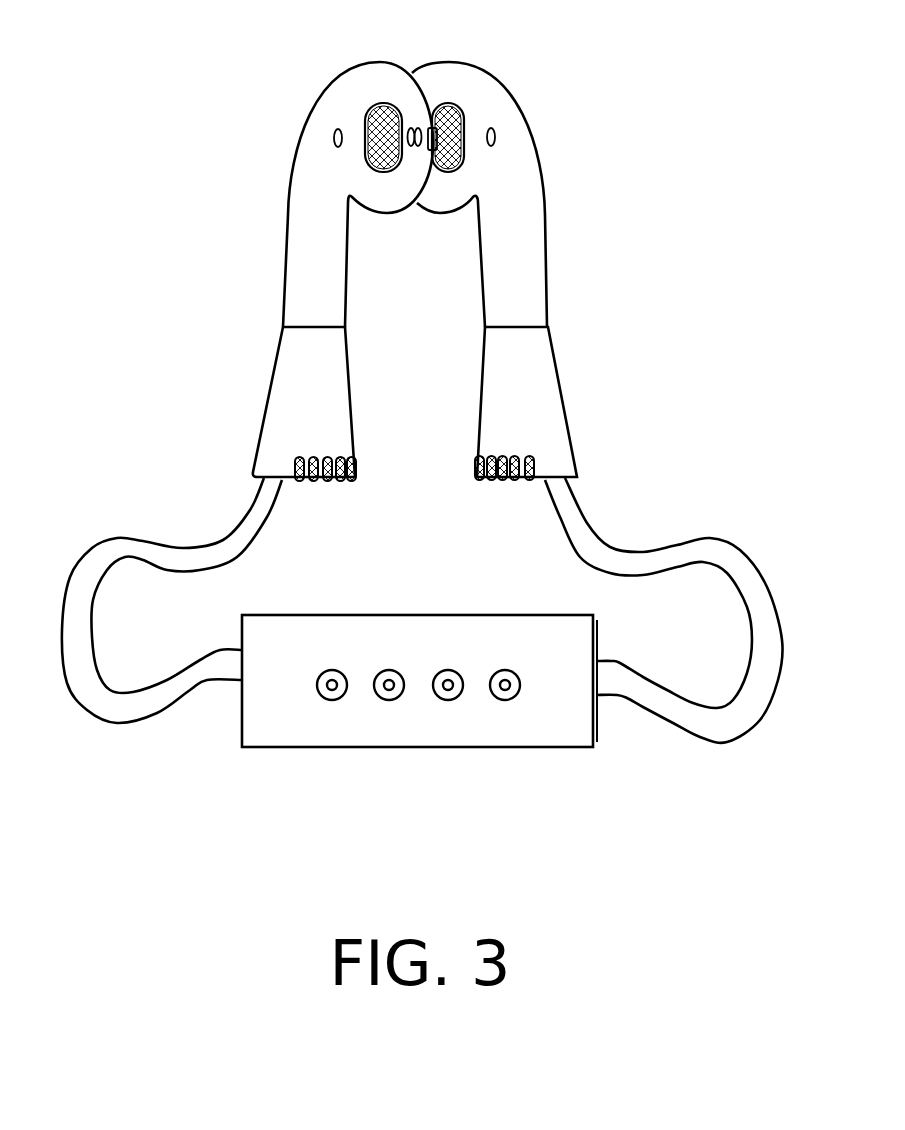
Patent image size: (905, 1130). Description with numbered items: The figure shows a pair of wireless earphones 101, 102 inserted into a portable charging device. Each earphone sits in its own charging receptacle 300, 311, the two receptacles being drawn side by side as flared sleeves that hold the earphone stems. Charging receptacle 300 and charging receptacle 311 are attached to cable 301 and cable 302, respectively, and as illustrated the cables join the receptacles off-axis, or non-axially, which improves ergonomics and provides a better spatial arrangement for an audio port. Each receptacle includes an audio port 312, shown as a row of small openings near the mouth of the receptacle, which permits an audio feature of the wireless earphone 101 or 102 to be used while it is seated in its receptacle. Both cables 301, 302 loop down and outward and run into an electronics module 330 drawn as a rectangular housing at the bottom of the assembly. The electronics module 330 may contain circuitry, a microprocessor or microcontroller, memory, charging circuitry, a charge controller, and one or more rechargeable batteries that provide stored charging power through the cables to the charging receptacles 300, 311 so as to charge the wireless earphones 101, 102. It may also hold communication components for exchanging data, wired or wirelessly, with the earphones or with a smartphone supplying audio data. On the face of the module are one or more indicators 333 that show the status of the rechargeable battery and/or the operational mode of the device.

The wireless earphone 101 is at (360, 82).
The wireless earphone 102 is at (480, 110).
The charging receptacle 300 is at (280, 408).
The charging receptacle 311 is at (552, 382).
The audio port 312 is at (487, 480).
The cable 301 is at (232, 543).
The cable 302 is at (603, 547).
The electronics module 330 is at (380, 747).
The indicators 333 is at (452, 697).